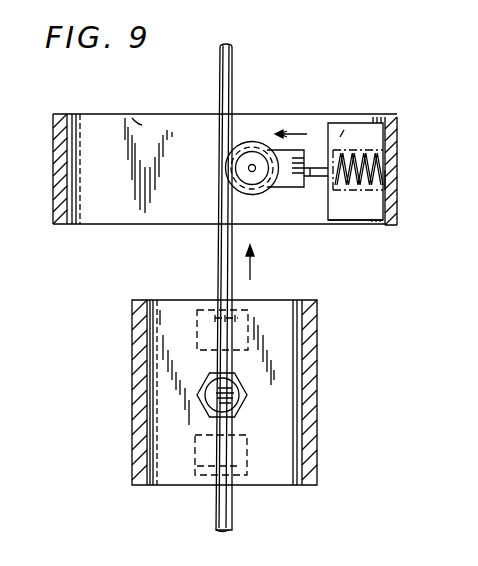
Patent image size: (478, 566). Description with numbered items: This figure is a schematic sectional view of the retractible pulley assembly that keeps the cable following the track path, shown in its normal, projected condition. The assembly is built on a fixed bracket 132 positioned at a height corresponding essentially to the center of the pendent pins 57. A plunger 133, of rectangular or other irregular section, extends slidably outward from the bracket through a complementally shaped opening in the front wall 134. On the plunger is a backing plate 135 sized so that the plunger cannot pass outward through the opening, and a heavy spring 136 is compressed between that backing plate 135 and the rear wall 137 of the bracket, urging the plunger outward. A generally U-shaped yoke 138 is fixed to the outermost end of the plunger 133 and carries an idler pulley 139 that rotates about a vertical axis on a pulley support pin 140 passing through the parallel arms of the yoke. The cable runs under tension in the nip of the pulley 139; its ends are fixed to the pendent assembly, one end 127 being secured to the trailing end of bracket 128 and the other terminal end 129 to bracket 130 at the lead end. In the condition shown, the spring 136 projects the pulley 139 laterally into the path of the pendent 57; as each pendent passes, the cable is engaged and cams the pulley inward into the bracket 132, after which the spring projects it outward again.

The pendent pin 57 is at (217, 390).
The cable end 127 is at (220, 296).
The bracket 128 is at (248, 316).
The terminal end of the cable 129 is at (213, 510).
The bracket 130 is at (256, 482).
The fixed bracket 132 is at (378, 205).
The plunger 133 is at (320, 182).
The front wall 134 is at (326, 220).
The backing plate 135 is at (345, 123).
The heavy spring 136 is at (390, 135).
The rear wall 137 is at (392, 178).
The U-shaped yoke 138 is at (305, 153).
The idler pulley 139 is at (251, 165).
The pulley support pin 140 is at (267, 150).